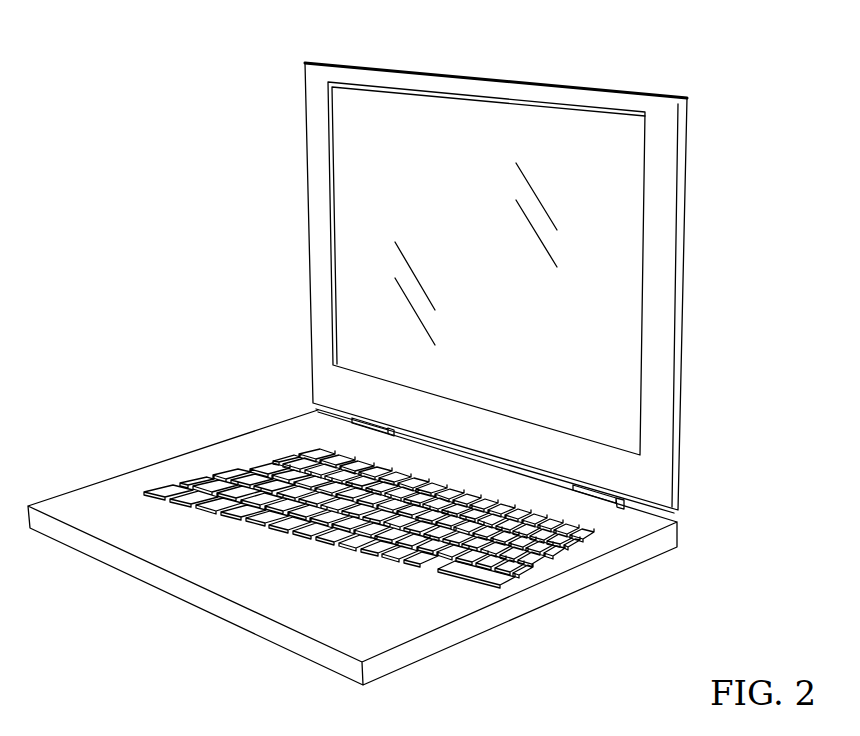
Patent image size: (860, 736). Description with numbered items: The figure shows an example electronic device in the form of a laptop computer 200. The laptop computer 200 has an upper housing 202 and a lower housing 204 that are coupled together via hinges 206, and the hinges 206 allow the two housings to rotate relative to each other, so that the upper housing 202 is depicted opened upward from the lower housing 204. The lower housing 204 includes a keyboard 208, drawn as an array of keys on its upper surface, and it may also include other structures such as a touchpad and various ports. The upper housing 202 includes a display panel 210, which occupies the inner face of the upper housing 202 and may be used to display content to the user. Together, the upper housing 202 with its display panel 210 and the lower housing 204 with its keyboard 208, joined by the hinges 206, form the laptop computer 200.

The laptop computer 200 is at (462, 75).
The upper housing 202 is at (664, 223).
The lower housing 204 is at (553, 588).
The hinges 206 is at (607, 500).
The keyboard 208 is at (468, 585).
The display panel 210 is at (362, 221).